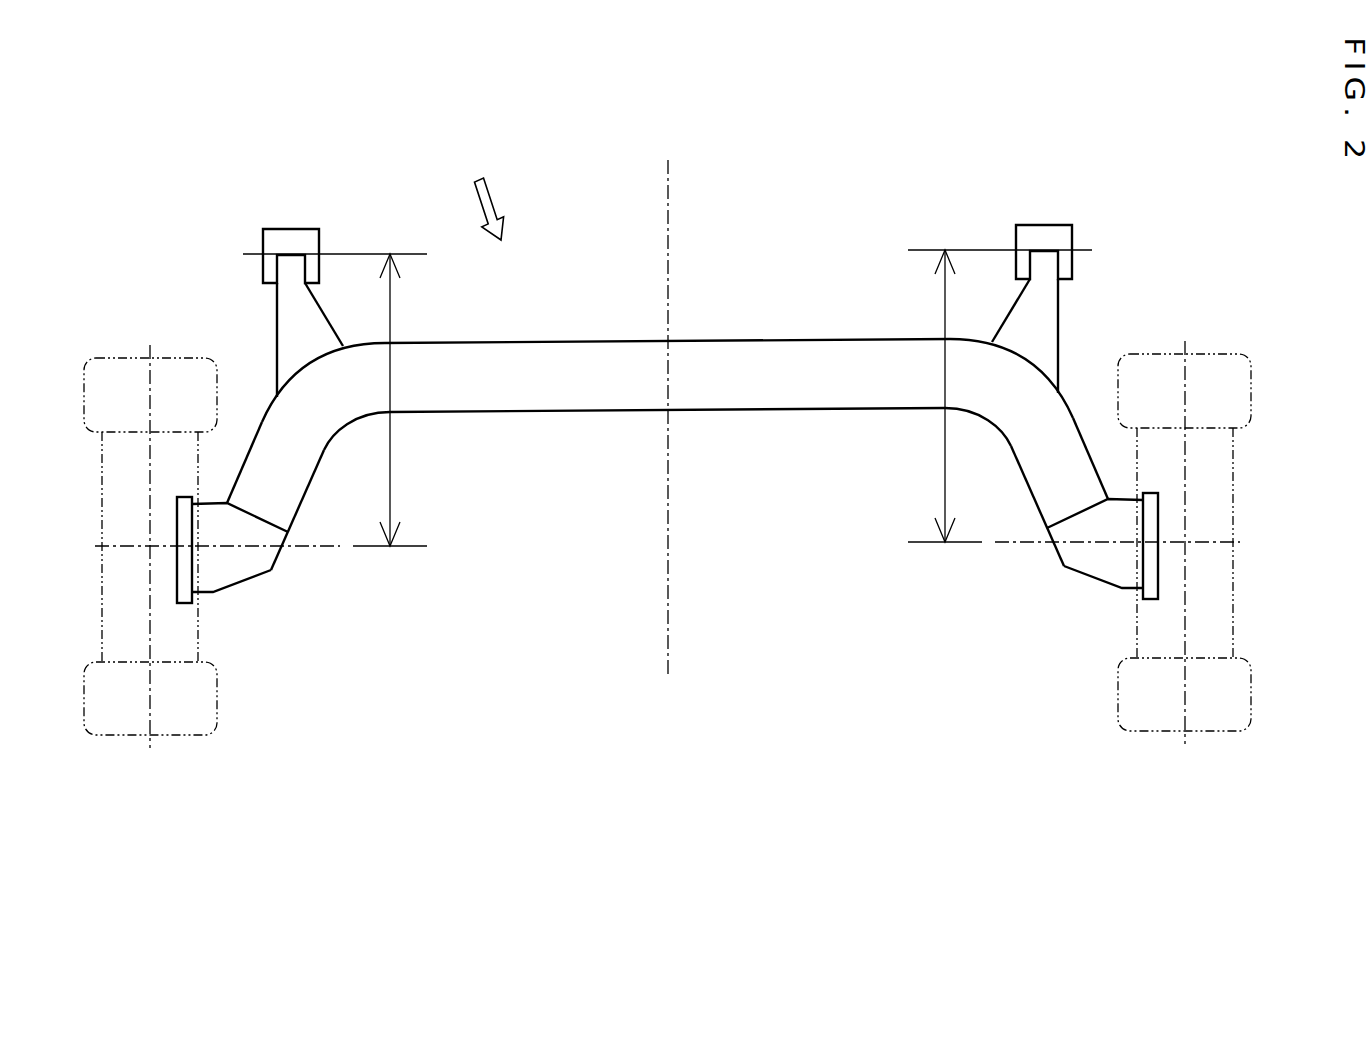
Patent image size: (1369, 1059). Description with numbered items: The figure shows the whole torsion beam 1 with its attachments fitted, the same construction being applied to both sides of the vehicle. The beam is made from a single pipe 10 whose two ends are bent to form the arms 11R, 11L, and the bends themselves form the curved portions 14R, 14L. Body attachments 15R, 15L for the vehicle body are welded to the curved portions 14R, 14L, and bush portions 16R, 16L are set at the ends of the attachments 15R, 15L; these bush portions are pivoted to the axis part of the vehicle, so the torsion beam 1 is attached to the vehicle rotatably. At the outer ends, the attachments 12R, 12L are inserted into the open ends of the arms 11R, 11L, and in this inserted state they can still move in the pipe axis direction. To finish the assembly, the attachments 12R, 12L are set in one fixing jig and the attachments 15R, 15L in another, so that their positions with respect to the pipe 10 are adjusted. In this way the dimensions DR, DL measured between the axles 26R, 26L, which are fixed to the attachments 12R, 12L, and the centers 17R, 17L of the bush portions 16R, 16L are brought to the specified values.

The torsion beam 1 is at (488, 194).
The pipe 10 is at (580, 340).
The left arm 11L is at (277, 432).
The right arm 11R is at (1058, 428).
The left attachment 12L is at (250, 577).
The right attachment 12R is at (1085, 573).
The left curved portion 14L is at (315, 396).
The right curved portion 14R is at (1020, 392).
The left body attachment 15L is at (275, 343).
The right body attachment 15R is at (1060, 339).
The left bush portion 16L is at (263, 242).
The right bush portion 16R is at (1072, 238).
The center of left bush portion 17L is at (331, 253).
The center of right bush portion 17R is at (1004, 249).
The left axle 26L is at (113, 545).
The right axle 26R is at (1220, 541).
The left dimension DL is at (390, 465).
The right dimension DR is at (945, 461).